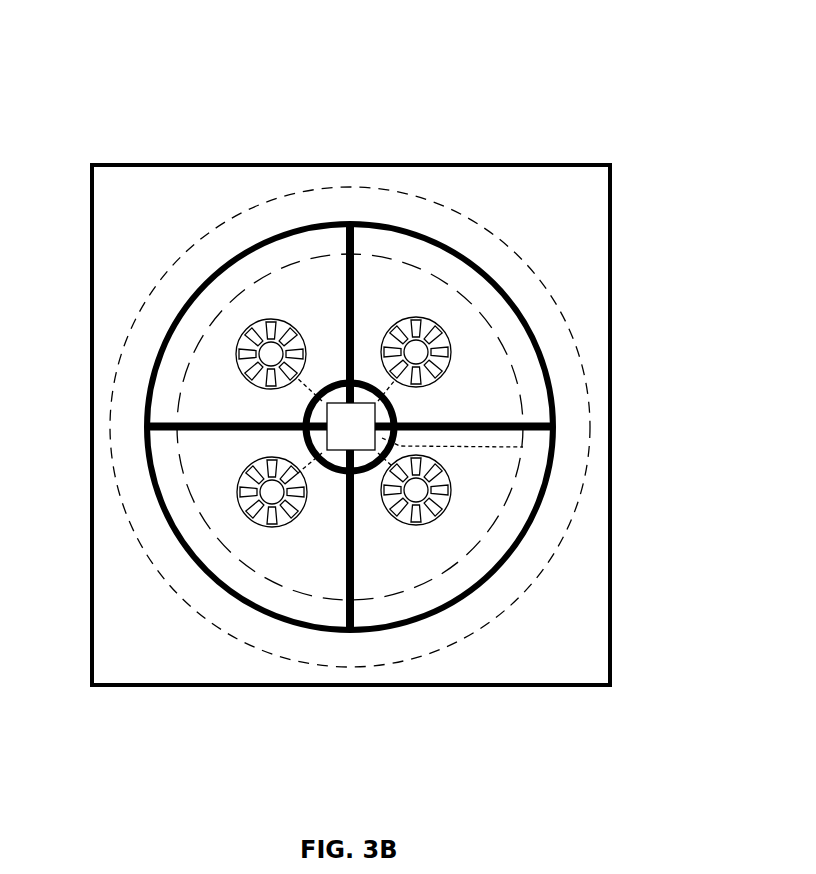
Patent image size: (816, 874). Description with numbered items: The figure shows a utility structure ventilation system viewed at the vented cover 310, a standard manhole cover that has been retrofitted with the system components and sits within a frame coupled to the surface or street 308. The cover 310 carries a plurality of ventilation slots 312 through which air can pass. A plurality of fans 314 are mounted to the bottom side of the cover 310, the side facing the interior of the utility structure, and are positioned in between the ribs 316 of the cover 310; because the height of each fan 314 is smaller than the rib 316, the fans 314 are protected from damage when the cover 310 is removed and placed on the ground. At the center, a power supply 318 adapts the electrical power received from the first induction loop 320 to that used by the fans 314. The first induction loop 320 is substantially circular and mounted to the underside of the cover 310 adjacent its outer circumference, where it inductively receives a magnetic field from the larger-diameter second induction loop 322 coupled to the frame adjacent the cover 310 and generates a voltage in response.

The street 308 is at (96, 165).
The vented cover 310 is at (416, 225).
The ventilation slots 312 is at (219, 144).
The fan 314 is at (290, 321).
The rib 316 is at (542, 420).
The power supply 318 is at (362, 383).
The first induction loop 320 is at (203, 332).
The second induction loop 322 is at (522, 594).